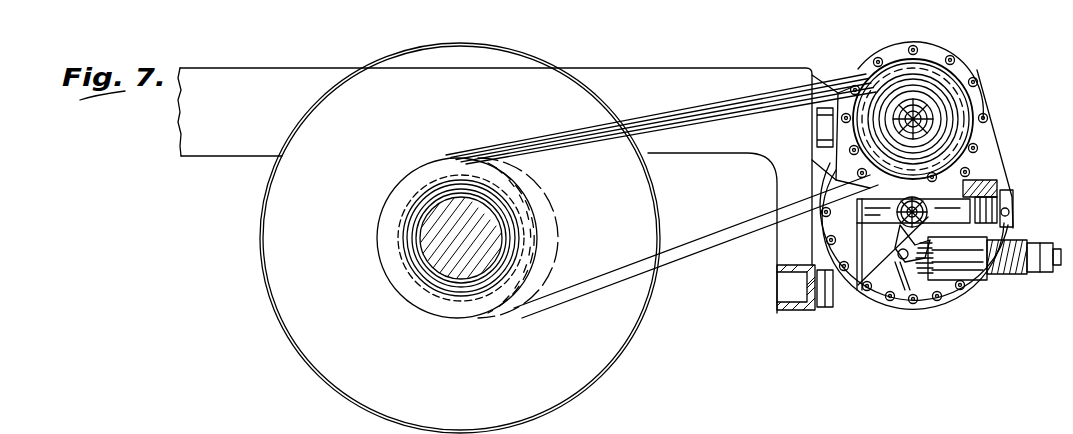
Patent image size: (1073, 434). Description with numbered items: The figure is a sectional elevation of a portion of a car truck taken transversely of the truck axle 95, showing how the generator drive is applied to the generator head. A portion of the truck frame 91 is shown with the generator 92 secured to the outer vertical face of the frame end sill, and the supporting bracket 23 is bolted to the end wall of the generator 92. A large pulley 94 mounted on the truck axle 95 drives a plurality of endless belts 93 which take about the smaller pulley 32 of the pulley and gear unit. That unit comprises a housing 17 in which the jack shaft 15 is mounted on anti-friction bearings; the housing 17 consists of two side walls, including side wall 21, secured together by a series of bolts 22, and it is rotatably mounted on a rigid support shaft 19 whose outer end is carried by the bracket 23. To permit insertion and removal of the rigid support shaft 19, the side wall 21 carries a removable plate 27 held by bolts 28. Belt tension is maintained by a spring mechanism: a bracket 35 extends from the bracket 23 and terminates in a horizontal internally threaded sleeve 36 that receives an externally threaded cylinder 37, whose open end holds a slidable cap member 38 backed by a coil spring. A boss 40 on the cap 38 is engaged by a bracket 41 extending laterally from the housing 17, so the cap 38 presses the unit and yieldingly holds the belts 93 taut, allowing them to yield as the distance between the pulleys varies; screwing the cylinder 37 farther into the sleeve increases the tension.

The jack shaft 15 is at (922, 120).
The housing 17 is at (962, 75).
The rigid support shaft 19 is at (988, 186).
The housing side wall 21 is at (975, 81).
The bolts 22 is at (908, 49).
The bracket 23 is at (858, 288).
The removable plate 27 is at (858, 187).
The bolts 28 is at (896, 250).
The pulley 32 is at (825, 92).
The bracket 35 is at (925, 242).
The cylindrical socket or sleeve 36 is at (985, 279).
The externally threaded cylinder 37 is at (1028, 273).
The slidable cylinder or cap member 38 is at (921, 258).
The boss or extension 40 is at (905, 260).
The bracket 41 is at (900, 265).
The truck frame 91 is at (777, 311).
The generator 92 is at (1013, 195).
The belts 93 is at (701, 238).
The pulley 94 is at (455, 322).
The truck axle 95 is at (433, 220).